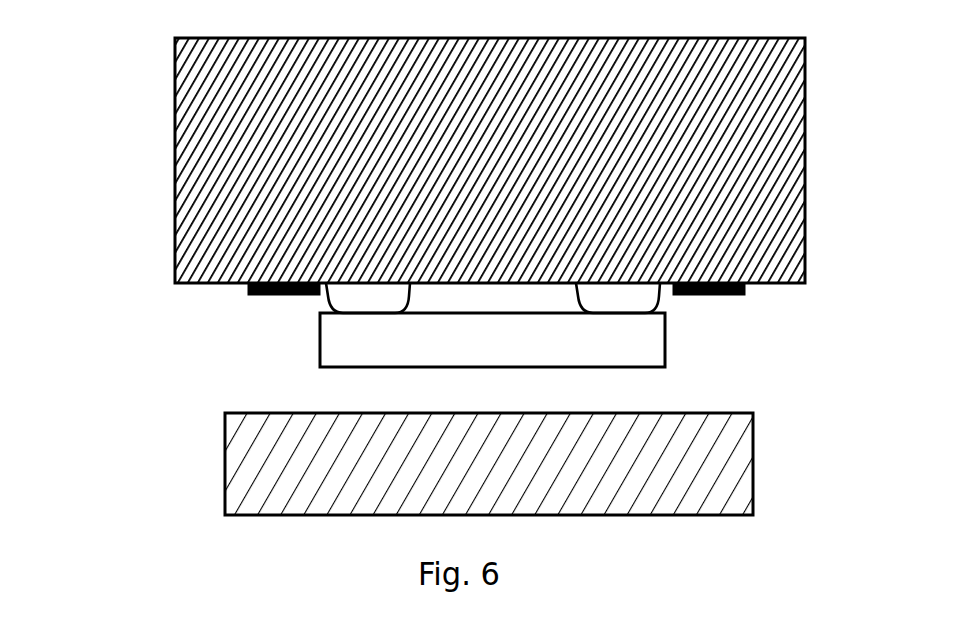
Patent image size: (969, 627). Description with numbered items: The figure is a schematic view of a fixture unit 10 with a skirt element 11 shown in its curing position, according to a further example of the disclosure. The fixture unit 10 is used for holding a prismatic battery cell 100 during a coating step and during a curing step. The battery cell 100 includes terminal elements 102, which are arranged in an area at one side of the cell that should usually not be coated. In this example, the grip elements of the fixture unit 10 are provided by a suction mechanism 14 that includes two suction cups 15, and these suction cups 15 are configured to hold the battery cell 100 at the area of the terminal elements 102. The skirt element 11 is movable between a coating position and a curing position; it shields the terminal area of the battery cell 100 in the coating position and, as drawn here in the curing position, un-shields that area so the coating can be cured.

The battery cell 100 is at (113, 129).
The terminal elements 102 is at (258, 296).
The suction cups 15 is at (327, 301).
The suction mechanism 14 is at (290, 359).
The skirt element 11 is at (755, 465).
The fixture unit 10 is at (156, 378).